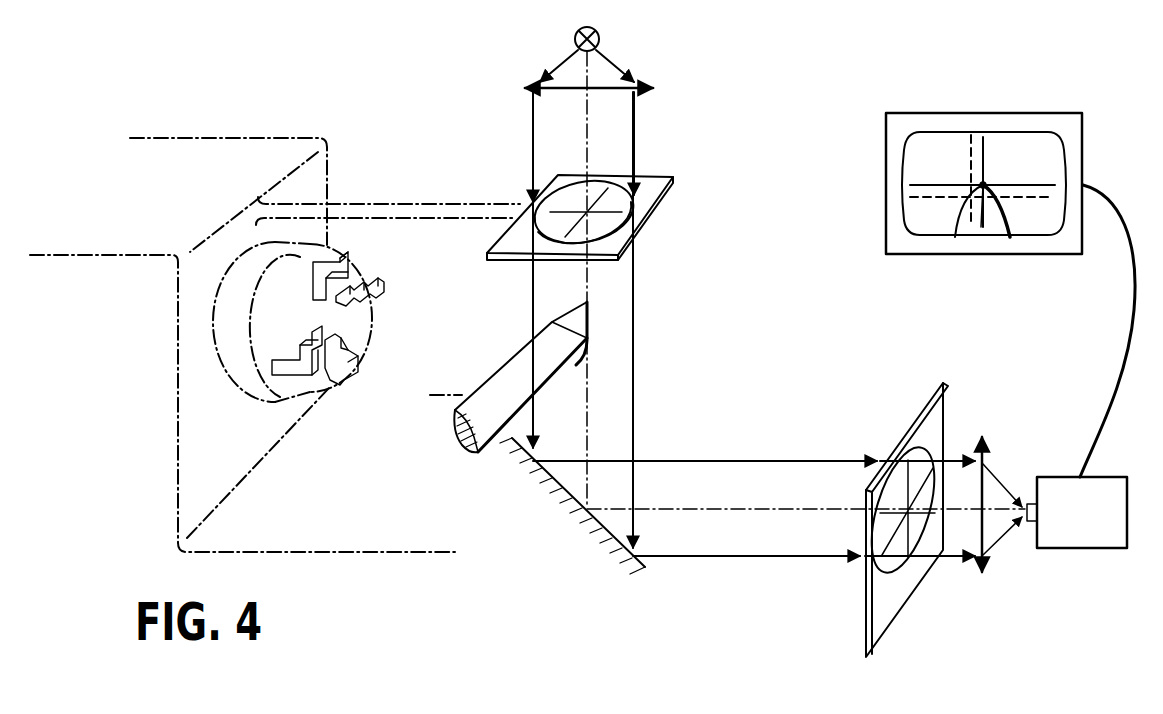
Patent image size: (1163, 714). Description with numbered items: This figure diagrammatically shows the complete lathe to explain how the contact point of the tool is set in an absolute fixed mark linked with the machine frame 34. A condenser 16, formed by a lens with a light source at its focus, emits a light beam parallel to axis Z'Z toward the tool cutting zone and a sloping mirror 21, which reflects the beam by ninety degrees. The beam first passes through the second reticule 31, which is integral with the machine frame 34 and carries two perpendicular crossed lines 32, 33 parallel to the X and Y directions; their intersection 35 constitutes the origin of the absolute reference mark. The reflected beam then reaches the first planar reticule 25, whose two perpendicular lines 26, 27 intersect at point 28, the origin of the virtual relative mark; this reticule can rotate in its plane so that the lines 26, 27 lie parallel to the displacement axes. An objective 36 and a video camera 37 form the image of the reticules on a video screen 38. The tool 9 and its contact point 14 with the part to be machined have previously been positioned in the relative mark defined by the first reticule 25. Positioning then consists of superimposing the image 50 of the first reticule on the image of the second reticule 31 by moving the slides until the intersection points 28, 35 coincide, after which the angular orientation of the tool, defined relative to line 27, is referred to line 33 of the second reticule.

The tool 9 is at (505, 368).
The contact point 14 is at (586, 300).
The condenser 16 is at (530, 53).
The sloping mirror 21 is at (557, 487).
The first planar reticule 25 is at (877, 607).
The line of first reticule 26 is at (990, 142).
The line of first reticule 27 is at (922, 187).
The intersection point 28 is at (980, 230).
The second reticule 31 is at (657, 182).
The crossed line of second reticule 32 is at (970, 146).
The crossed line of second reticule 33 is at (918, 196).
The machine frame 34 is at (197, 137).
The intersection 35 is at (970, 195).
The objective 36 is at (982, 580).
The video camera 37 is at (1110, 535).
The video screen 38 is at (883, 100).
The image of the first reticule 50 is at (992, 156).